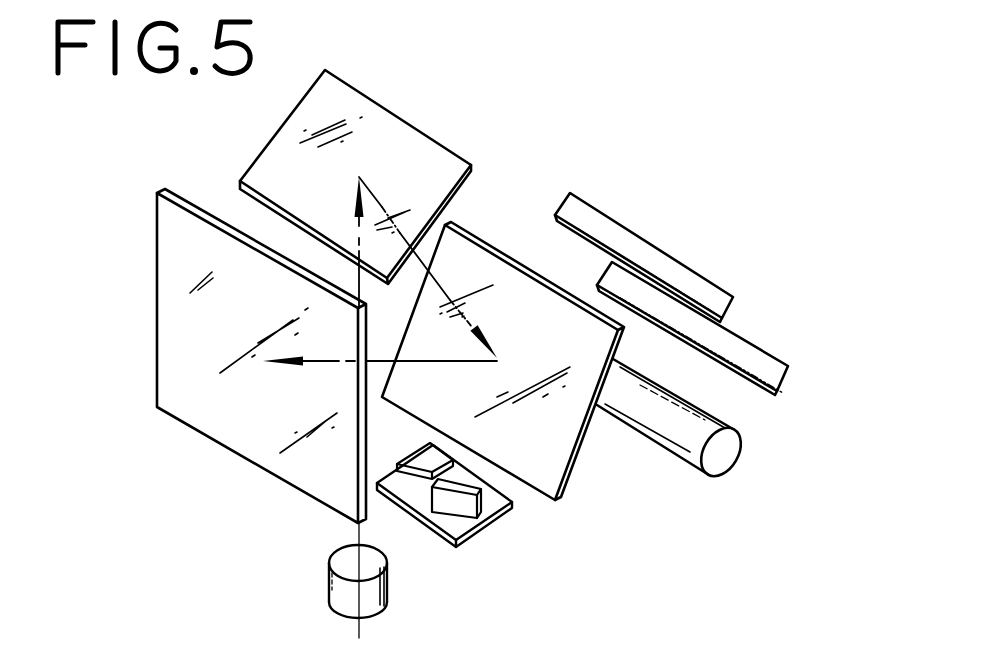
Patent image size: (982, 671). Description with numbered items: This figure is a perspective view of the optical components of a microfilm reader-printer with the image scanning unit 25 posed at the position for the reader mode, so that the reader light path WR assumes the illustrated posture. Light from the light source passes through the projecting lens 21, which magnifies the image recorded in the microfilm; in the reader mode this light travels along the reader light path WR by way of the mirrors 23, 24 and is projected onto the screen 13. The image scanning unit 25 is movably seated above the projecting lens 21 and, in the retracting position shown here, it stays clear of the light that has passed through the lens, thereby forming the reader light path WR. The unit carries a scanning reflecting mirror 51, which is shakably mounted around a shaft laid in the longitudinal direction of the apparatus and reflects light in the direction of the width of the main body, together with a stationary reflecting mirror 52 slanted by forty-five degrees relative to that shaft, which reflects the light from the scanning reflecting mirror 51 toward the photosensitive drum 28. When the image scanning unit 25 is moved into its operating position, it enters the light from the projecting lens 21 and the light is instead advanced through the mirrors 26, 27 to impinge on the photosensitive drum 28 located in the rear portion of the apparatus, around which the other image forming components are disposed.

The screen 13 is at (222, 417).
The projecting lens 21 is at (368, 600).
The mirror 23 is at (385, 118).
The mirror 24 is at (555, 470).
The image scanning unit 25 is at (521, 540).
The mirror 26 is at (738, 336).
The mirror 27 is at (635, 235).
The photosensitive drum 28 is at (730, 462).
The scanning reflecting mirror 51 is at (420, 465).
The stationary reflecting mirror 52 is at (457, 508).
The reader light path WR is at (432, 272).